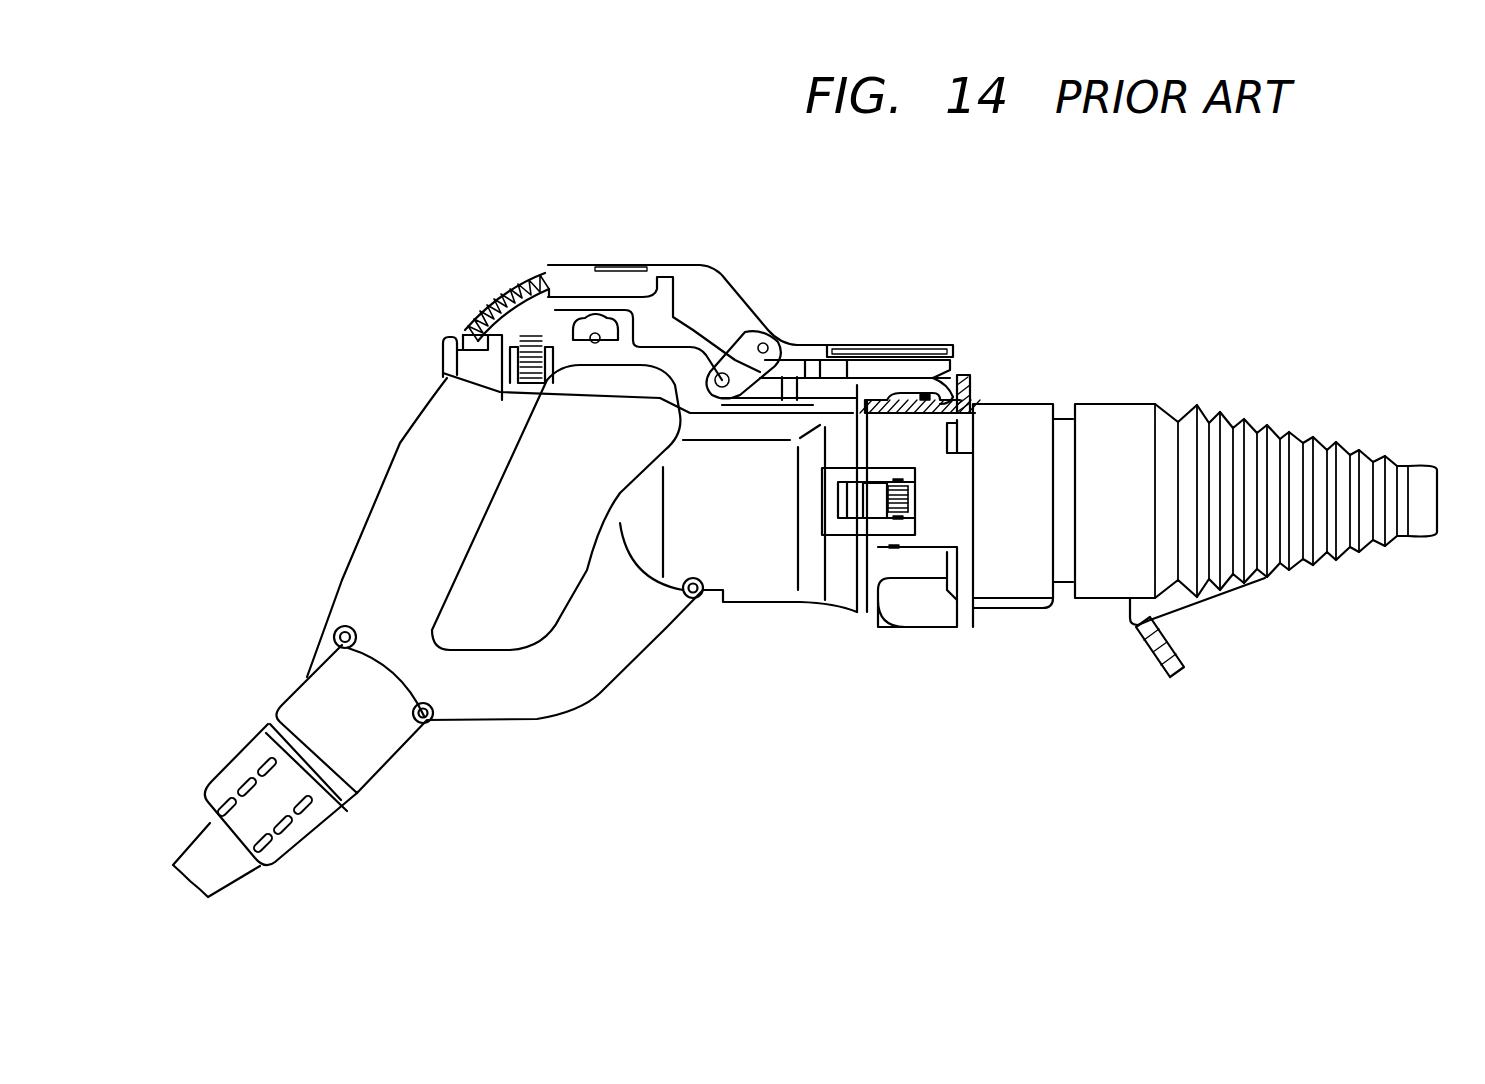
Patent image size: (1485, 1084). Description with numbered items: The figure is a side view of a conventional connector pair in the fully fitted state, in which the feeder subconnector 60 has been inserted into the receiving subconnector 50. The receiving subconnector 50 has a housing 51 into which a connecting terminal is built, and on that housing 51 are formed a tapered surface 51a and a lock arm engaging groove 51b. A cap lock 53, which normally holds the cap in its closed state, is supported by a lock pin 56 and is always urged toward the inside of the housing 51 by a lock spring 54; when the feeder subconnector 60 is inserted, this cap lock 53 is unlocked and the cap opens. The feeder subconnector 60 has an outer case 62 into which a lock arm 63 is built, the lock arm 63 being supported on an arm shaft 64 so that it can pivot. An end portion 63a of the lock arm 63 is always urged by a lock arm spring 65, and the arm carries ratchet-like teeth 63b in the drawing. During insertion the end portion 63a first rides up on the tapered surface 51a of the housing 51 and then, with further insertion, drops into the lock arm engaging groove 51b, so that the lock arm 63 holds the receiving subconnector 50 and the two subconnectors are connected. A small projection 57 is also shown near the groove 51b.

The receiving subconnector 50 is at (1173, 355).
The housing 51 is at (1022, 578).
The tapered surface 51a is at (878, 392).
The lock arm engaging groove 51b is at (963, 372).
The cap lock 53 is at (827, 513).
The lock spring 54 is at (887, 507).
The lock pin 56 is at (895, 548).
The engaging projection 57 is at (918, 393).
The feeder subconnector 60 is at (760, 243).
The outer case 62 is at (806, 345).
The lock arm 63 is at (677, 318).
The end portion 63a is at (945, 380).
The ratchet teeth 63b is at (495, 318).
The arm shaft 64 is at (726, 372).
The lock arm spring 65 is at (445, 347).